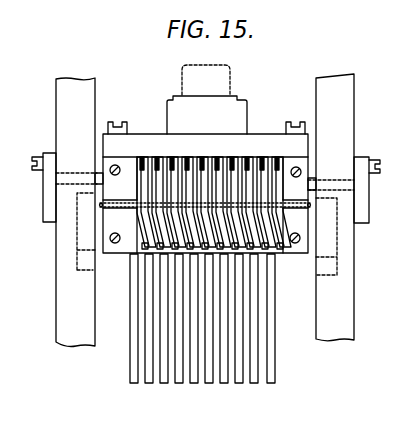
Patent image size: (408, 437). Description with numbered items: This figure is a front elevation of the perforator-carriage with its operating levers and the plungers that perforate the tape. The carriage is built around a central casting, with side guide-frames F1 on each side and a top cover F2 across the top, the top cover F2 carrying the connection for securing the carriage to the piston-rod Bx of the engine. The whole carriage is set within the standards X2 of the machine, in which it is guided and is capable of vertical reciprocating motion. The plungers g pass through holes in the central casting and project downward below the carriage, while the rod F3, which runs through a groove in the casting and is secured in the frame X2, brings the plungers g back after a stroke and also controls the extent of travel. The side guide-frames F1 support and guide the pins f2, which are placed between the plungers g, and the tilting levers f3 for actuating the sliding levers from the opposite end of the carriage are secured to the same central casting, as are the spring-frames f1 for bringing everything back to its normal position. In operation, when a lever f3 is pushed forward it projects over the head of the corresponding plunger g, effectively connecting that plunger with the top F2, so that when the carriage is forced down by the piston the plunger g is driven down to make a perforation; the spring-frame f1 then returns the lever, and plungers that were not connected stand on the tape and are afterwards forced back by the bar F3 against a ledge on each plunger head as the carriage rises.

The side guide-frame F1 is at (205, 230).
The top cover F2 is at (205, 193).
The rod F3 is at (330, 160).
The spring-frame f1 is at (160, 157).
The pin f2 is at (290, 265).
The tilting lever f3 is at (285, 184).
The plunger g is at (134, 348).
The standard X2 is at (205, 210).
The piston-rod Bx is at (206, 80).